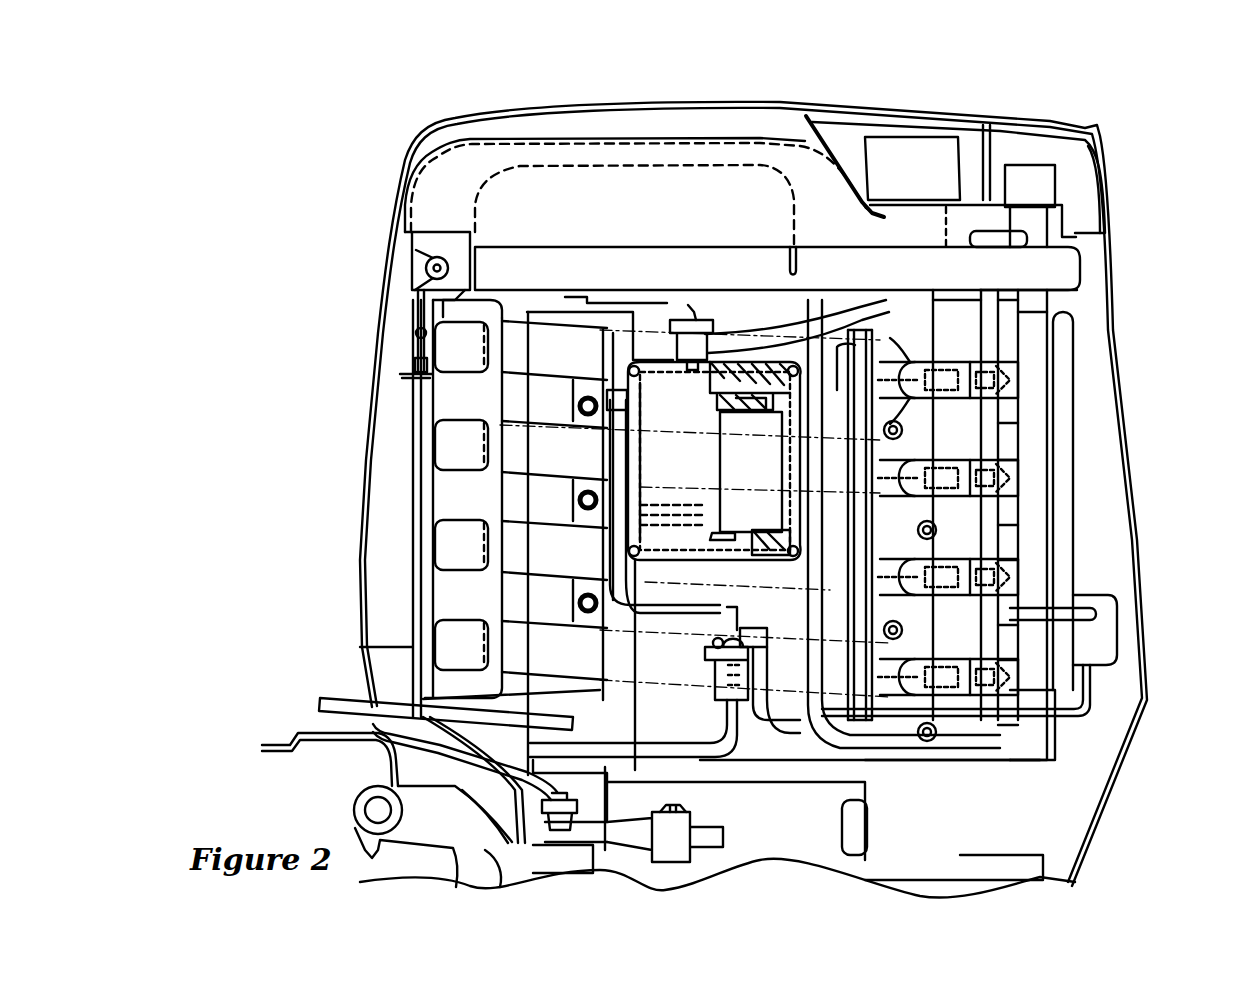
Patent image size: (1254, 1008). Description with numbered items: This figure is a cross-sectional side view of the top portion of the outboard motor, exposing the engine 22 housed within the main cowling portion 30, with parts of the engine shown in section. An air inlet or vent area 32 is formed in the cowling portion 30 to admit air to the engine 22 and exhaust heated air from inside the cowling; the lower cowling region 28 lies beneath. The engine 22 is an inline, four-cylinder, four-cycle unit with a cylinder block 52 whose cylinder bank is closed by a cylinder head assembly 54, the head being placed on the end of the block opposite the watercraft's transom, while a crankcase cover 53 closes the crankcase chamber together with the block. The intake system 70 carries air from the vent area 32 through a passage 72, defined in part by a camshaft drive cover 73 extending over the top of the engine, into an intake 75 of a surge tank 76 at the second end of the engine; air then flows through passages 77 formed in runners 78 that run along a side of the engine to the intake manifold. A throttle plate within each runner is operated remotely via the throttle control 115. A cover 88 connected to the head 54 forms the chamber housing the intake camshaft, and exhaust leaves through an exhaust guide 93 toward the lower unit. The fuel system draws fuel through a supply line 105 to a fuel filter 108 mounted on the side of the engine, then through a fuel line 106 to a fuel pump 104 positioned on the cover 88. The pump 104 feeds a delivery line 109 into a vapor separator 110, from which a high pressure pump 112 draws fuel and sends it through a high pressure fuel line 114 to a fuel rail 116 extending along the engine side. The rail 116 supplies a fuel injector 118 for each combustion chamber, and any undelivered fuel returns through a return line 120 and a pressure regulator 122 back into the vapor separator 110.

The engine 22 is at (1097, 340).
The lower cowling 28 is at (1128, 758).
The main cowling portion 30 is at (1145, 490).
The air inlet or vent area 32 is at (1008, 130).
The cylinder block 52 is at (782, 780).
The crankcase cover 53 is at (680, 790).
The cylinder head assembly 54 is at (888, 335).
The intake system 70 is at (918, 105).
The passage 72 is at (660, 150).
The camshaft drive cover 73 is at (518, 198).
The intake 75 is at (430, 240).
The surge tank 76 is at (445, 490).
The passages 77 is at (573, 340).
The runners 78 is at (528, 440).
The cover 88 is at (1043, 430).
The exhaust guide 93 is at (890, 865).
The fuel pump 104 is at (1100, 628).
The supply line 105 is at (350, 705).
The fuel line 106 is at (960, 735).
The fuel filter 108 is at (720, 680).
The delivery line 109 is at (662, 612).
The vapor separator 110 is at (660, 450).
The high pressure pump 112 is at (740, 428).
The high pressure fuel line 114 is at (950, 760).
The throttle control 115 is at (413, 556).
The fuel rail 116 is at (427, 280).
The fuel injector 118 is at (1007, 376).
The return line 120 is at (842, 330).
The pressure regulator 122 is at (690, 305).